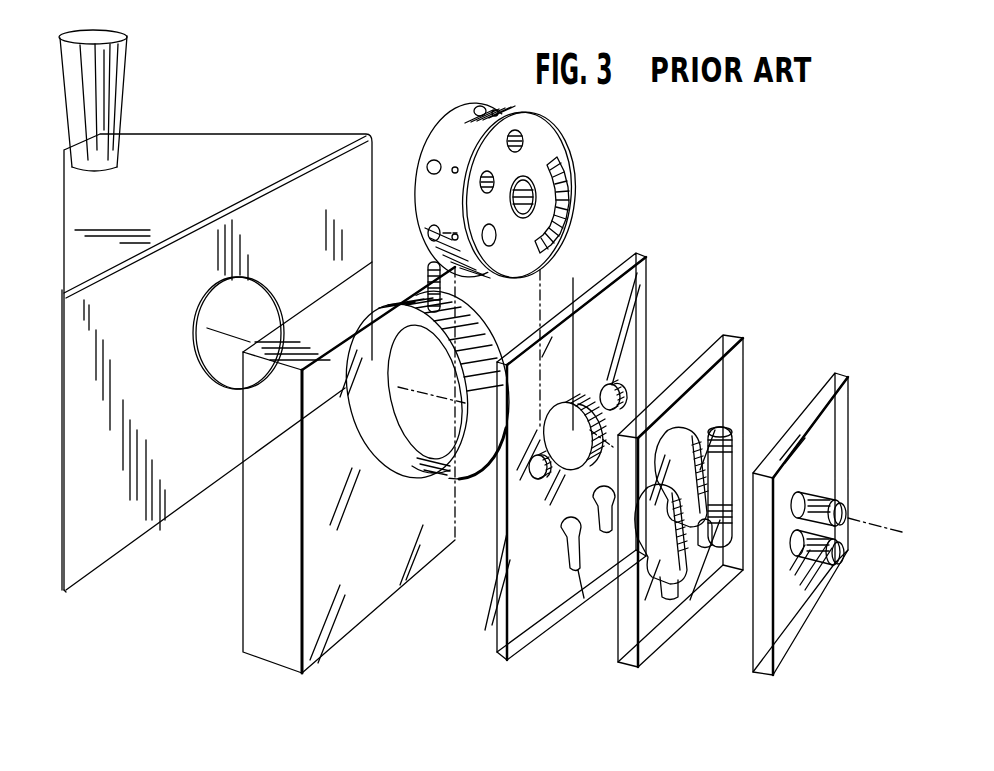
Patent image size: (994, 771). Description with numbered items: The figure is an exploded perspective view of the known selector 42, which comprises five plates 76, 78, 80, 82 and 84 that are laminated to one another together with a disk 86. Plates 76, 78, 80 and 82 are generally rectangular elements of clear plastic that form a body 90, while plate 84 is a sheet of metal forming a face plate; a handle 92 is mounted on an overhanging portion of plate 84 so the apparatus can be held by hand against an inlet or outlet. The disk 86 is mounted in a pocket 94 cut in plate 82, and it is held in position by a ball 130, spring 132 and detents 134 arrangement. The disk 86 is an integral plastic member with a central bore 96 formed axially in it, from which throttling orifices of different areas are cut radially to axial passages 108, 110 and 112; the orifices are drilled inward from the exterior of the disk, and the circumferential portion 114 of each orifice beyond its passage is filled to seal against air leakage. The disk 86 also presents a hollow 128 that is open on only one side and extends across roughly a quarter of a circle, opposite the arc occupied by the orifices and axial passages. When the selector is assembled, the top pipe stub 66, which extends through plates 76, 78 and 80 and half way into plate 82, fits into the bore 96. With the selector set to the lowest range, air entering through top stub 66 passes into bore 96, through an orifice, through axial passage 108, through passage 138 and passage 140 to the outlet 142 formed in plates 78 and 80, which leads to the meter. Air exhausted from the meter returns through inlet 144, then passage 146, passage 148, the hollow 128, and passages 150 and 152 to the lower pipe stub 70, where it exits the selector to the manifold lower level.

The selector 42 is at (302, 112).
The top pipe stub 66 is at (830, 497).
The lower pipe stub 70 is at (813, 563).
The plate 76 is at (760, 678).
The plate 78 is at (623, 667).
The plate 80 is at (495, 660).
The plate 82 is at (263, 672).
The plate 84 is at (64, 592).
The disk 86 is at (513, 247).
The body 90 is at (447, 712).
The handle 92 is at (128, 32).
The pocket 94 is at (460, 465).
The central bore 96 is at (527, 180).
The axial passage 108 is at (508, 212).
The axial passage 110 is at (497, 175).
The axial passage 112 is at (523, 134).
The circumferential portion 114 is at (431, 160).
The hollow 128 is at (557, 207).
The ball 130 is at (428, 318).
The spring 132 is at (430, 270).
The detents 134 is at (456, 166).
The passage 138 is at (497, 533).
The passage 140 is at (693, 603).
The outlet 142 is at (660, 593).
The inlet 144 is at (595, 513).
The passage 146 is at (732, 438).
The passage 148 is at (628, 385).
The passage 150 is at (600, 376).
The passage 152 is at (702, 425).